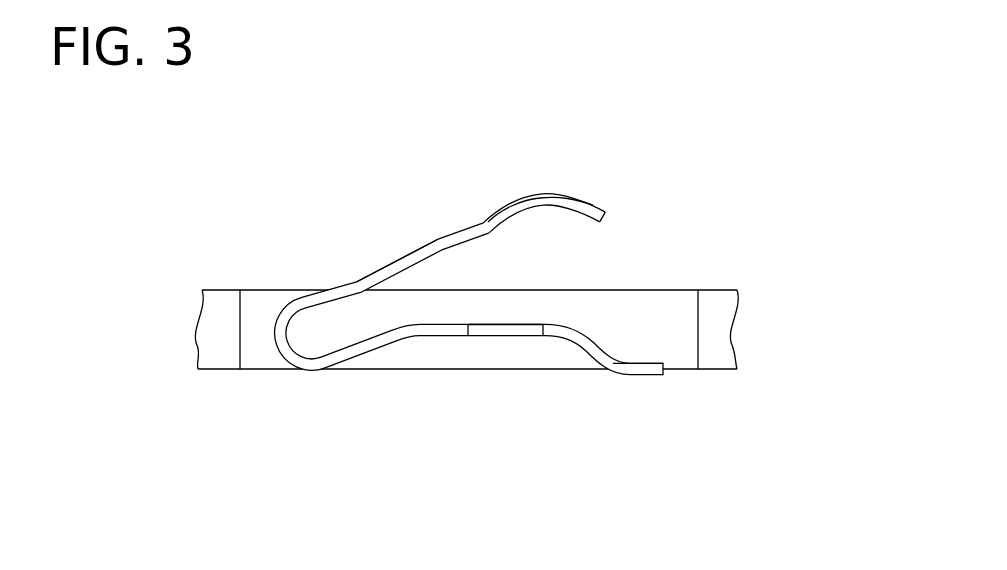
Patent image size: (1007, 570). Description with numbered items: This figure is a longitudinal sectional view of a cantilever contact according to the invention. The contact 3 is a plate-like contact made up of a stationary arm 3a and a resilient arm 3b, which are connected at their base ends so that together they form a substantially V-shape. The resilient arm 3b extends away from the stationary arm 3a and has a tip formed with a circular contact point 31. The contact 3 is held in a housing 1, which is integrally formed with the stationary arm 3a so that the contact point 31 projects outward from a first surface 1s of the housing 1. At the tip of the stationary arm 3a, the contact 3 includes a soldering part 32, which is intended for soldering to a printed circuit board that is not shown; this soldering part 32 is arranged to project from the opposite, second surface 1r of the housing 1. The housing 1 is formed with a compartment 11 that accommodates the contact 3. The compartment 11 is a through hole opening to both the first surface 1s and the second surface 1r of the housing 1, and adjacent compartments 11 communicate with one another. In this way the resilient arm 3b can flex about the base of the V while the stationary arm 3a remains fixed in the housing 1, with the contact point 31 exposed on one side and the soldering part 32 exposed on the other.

The housing 1 is at (720, 288).
The compartment 11 is at (265, 305).
The first surface 1s is at (648, 290).
The second surface 1r is at (263, 370).
The contact 3 is at (340, 212).
The stationary arm 3a is at (443, 336).
The resilient arm 3b is at (430, 244).
The contact point 31 is at (540, 193).
The soldering part 32 is at (635, 376).